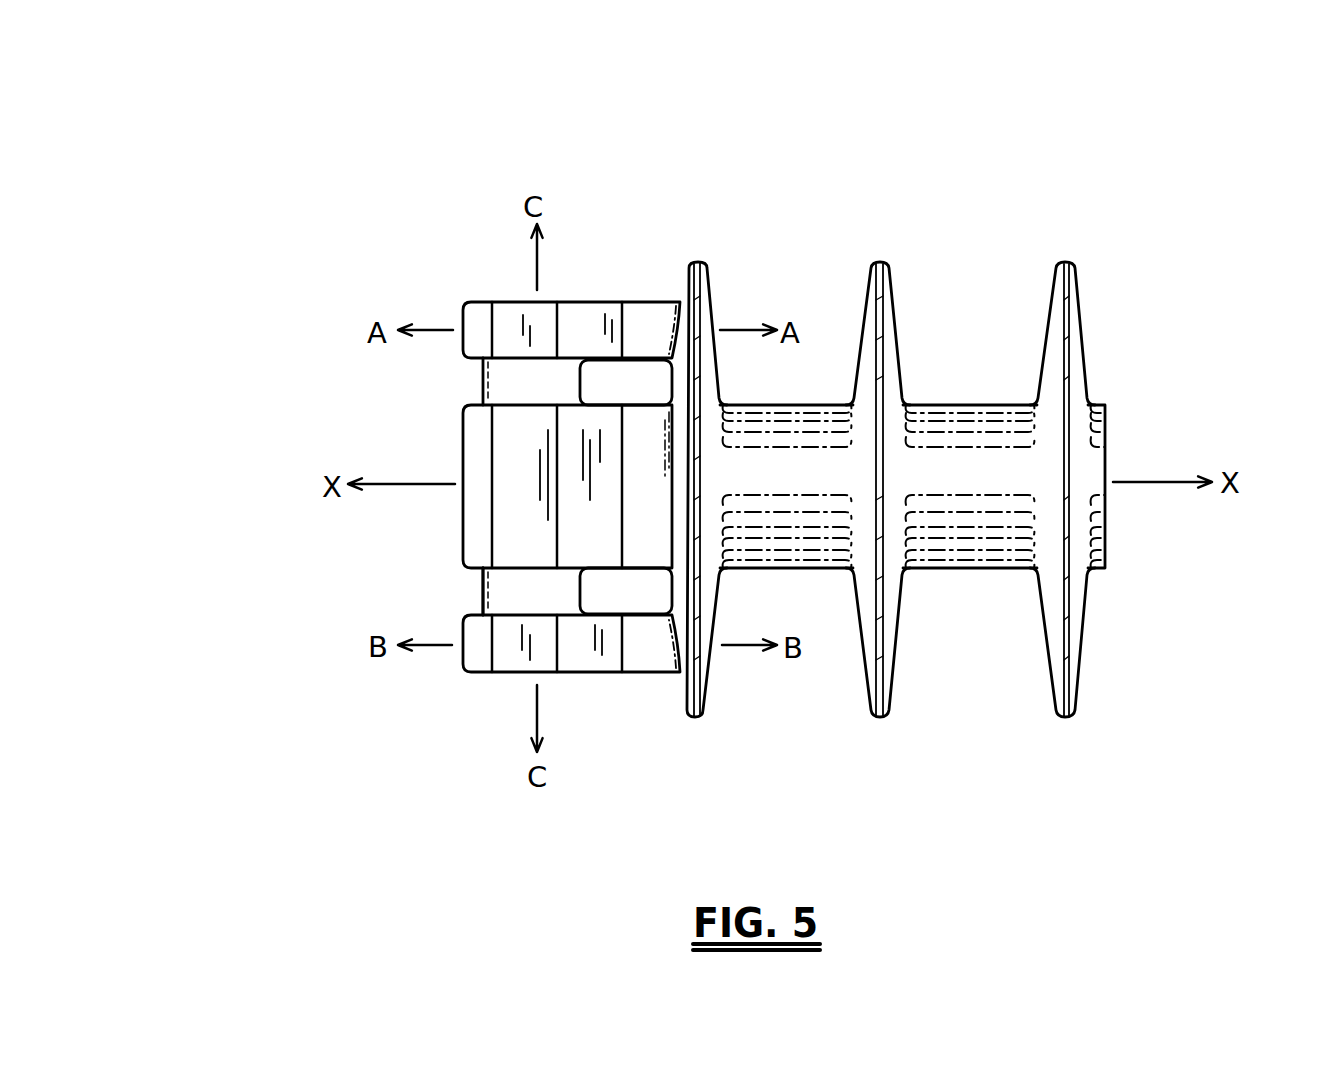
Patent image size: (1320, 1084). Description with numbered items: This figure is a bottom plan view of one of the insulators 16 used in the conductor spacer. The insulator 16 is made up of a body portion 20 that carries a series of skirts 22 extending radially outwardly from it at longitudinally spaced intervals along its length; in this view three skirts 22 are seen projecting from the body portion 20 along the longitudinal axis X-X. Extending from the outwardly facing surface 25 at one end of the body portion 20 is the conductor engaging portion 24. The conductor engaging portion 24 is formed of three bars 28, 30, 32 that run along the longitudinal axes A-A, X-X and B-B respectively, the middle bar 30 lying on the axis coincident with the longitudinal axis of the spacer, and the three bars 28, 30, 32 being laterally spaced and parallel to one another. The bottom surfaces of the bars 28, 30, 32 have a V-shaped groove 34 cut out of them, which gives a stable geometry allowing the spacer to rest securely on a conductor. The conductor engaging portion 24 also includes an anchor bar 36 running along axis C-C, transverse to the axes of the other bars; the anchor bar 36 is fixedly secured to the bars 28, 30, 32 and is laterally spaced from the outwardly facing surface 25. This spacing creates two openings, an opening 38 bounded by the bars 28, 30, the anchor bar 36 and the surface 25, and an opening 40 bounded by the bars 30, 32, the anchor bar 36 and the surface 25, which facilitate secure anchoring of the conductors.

The insulator 16 is at (1103, 229).
The body portion 20 is at (940, 548).
The skirts 22 is at (888, 265).
The conductor engaging portion 24 is at (465, 713).
The outwardly facing surface 25 is at (678, 298).
The bar 28 is at (481, 302).
The bar 30 is at (473, 540).
The bar 32 is at (483, 376).
The V-shaped groove 34 is at (569, 320).
The anchor bar 36 is at (498, 583).
The opening 38 is at (628, 376).
The opening 40 is at (643, 600).